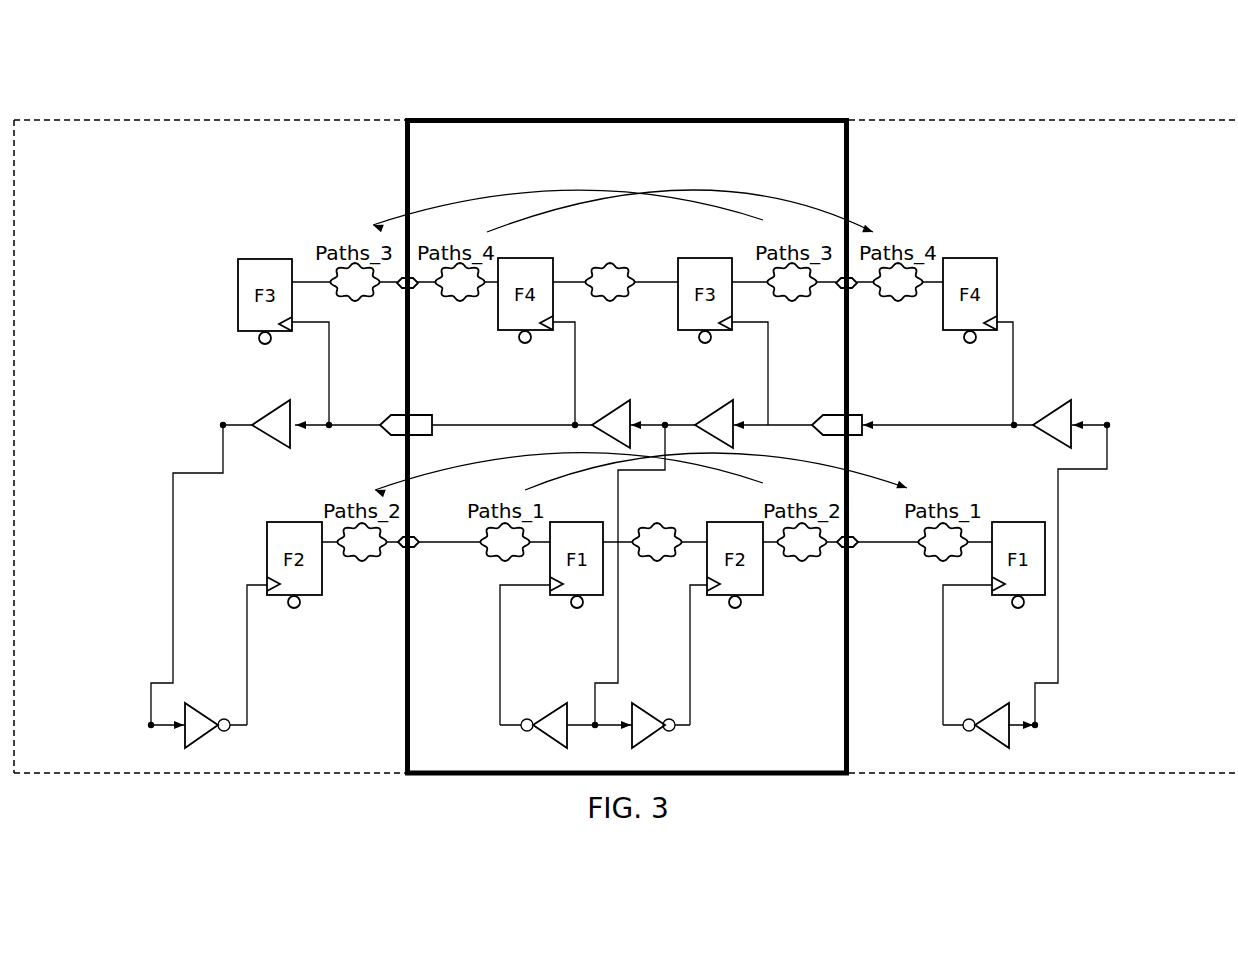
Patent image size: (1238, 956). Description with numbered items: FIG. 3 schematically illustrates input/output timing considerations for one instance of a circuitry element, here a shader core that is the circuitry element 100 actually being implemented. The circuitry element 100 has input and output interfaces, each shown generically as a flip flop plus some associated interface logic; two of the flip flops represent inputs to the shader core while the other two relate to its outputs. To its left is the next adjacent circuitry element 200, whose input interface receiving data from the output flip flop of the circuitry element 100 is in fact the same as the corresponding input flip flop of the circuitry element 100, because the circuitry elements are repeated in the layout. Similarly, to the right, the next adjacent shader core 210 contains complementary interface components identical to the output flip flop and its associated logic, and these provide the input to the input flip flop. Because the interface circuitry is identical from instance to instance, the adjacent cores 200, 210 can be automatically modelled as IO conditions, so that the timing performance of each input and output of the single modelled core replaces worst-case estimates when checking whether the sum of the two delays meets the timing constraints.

The next adjacent circuitry element 200 is at (206, 140).
The circuitry element 100 is at (778, 119).
The next adjacent shader core 210 is at (1030, 140).